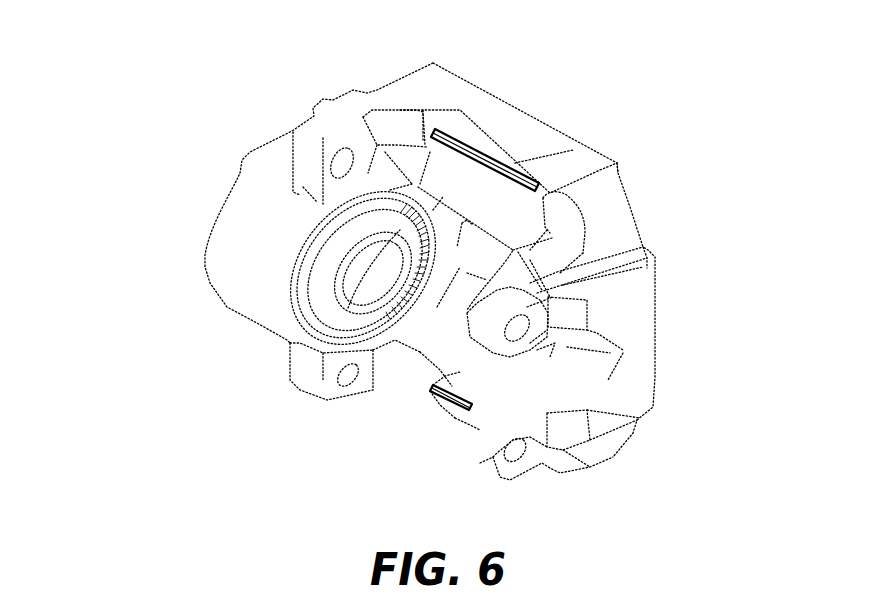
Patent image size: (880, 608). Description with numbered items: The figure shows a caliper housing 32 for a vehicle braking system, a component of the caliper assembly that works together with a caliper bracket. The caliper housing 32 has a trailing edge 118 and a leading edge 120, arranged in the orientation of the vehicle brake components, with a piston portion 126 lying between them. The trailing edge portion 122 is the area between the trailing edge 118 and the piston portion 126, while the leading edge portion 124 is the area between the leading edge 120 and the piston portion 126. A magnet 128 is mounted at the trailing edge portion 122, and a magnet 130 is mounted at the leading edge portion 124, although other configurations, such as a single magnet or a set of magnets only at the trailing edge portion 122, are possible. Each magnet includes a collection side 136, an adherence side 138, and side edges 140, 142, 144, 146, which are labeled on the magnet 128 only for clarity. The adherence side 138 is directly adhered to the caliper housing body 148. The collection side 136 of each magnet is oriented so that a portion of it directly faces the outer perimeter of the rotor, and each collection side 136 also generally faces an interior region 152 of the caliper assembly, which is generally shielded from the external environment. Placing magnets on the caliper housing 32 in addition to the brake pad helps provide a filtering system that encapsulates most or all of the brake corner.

The caliper housing 32 is at (630, 98).
The trailing edge 118 is at (592, 463).
The leading edge 120 is at (517, 120).
The trailing edge portion 122 is at (673, 410).
The leading edge portion 124 is at (670, 93).
The piston portion 126 is at (148, 172).
The magnet 128 is at (437, 402).
The magnet 130 is at (457, 147).
The collection side 136 is at (437, 397).
The adherence side 138 is at (472, 397).
The side edge 140 is at (448, 408).
The side edge 142 is at (467, 410).
The side edge 144 is at (453, 393).
The side edge 146 is at (432, 393).
The caliper housing body 148 is at (358, 98).
The interior region 152 is at (410, 181).